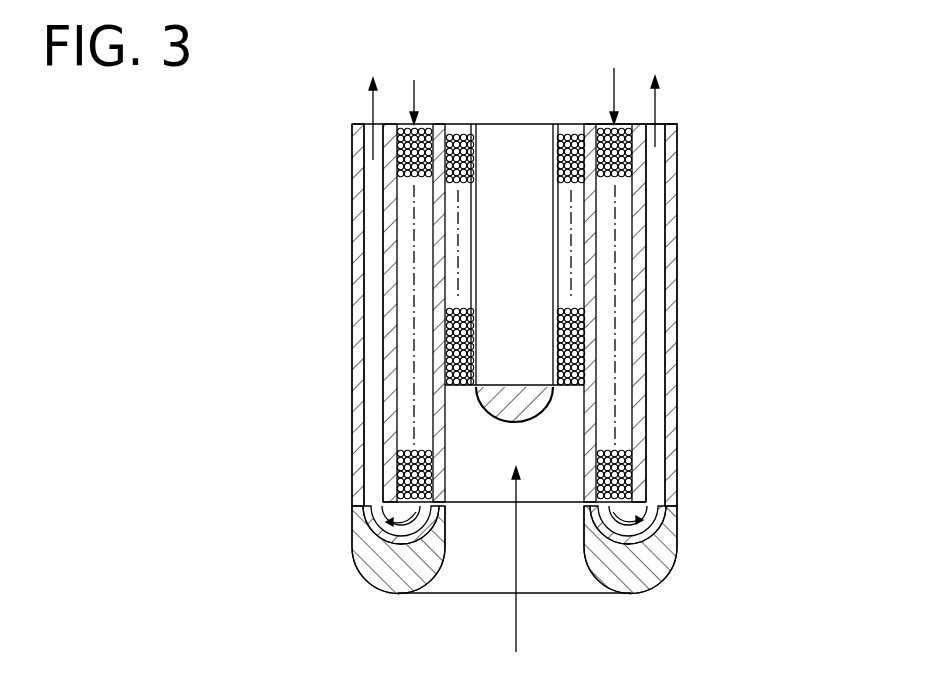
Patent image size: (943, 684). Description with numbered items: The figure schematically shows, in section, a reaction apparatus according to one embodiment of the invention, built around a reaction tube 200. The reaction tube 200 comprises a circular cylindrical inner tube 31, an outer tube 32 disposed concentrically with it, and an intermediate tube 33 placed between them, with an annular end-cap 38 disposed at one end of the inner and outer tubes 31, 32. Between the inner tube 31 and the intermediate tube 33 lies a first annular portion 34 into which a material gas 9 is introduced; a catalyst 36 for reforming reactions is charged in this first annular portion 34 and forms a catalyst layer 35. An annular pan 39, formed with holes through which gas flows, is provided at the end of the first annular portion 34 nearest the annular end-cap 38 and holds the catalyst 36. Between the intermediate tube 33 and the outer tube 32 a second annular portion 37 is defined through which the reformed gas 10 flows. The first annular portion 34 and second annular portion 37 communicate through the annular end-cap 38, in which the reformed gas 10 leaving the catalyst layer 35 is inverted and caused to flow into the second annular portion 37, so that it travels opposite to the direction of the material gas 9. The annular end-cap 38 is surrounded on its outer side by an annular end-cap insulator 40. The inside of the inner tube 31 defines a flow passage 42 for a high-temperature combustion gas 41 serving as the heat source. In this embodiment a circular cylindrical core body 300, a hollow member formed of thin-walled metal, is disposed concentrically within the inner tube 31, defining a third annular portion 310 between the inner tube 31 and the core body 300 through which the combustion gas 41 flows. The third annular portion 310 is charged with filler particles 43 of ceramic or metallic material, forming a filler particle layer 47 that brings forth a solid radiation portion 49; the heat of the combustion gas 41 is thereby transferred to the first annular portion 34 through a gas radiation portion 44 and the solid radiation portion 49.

The reaction tube 200 is at (688, 352).
The outer tube 32 is at (673, 257).
The catalyst layer 35 is at (672, 155).
The second annular portion 37 is at (655, 327).
The intermediate tube 33 is at (640, 283).
The filler particle layer 47 is at (438, 194).
The inner tube 31 is at (592, 220).
The first annular portion 34 is at (624, 124).
The catalyst 36 is at (617, 177).
The material gas 9 is at (417, 100).
The reformed gas 10 is at (372, 108).
The filler particles 43 is at (492, 135).
The third annular portion 310 is at (466, 124).
The core body 300 is at (452, 290).
The solid radiation portion 49 is at (455, 243).
The gas radiation portion 44 is at (468, 432).
The flow passage 42 is at (555, 433).
The combustion gas 41 is at (516, 620).
The annular end-cap insulator 40 is at (680, 545).
The annular end-cap 38 is at (675, 515).
The annular pan 39 is at (670, 503).